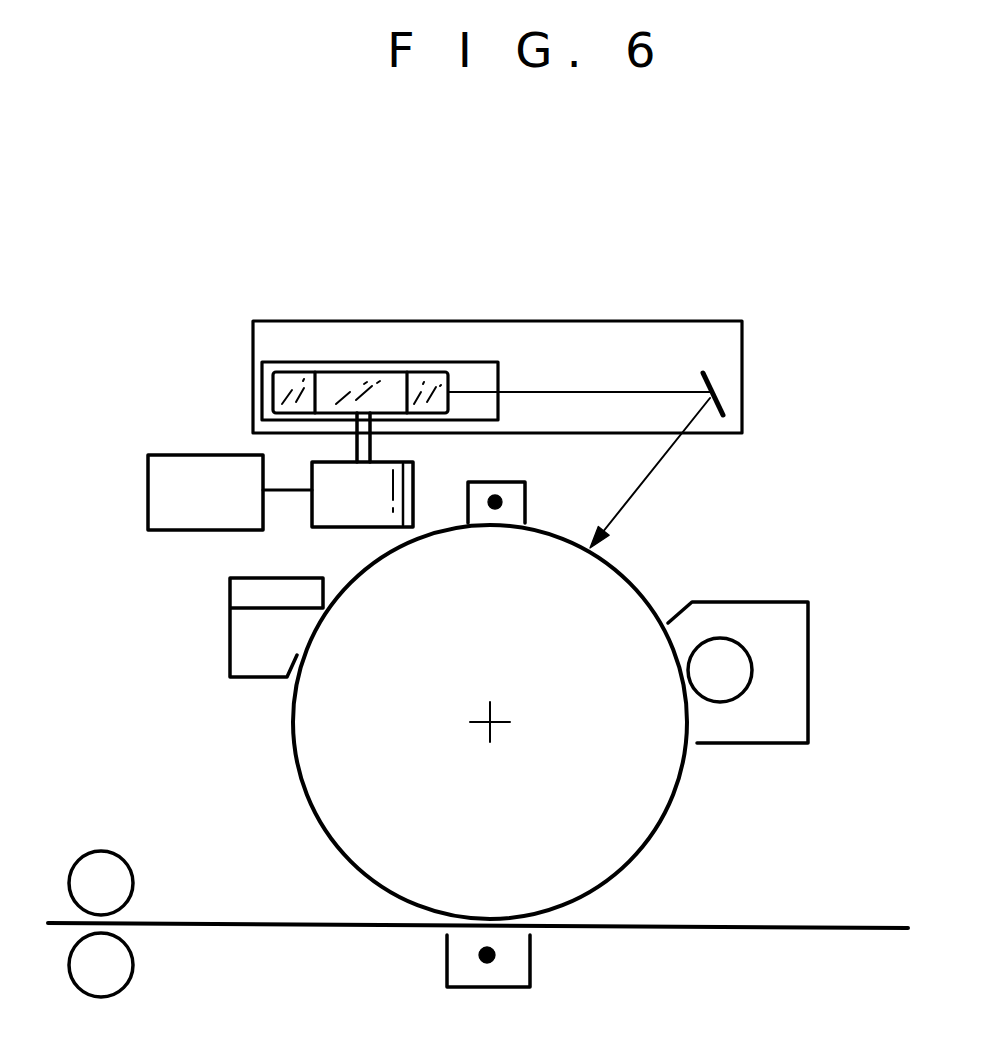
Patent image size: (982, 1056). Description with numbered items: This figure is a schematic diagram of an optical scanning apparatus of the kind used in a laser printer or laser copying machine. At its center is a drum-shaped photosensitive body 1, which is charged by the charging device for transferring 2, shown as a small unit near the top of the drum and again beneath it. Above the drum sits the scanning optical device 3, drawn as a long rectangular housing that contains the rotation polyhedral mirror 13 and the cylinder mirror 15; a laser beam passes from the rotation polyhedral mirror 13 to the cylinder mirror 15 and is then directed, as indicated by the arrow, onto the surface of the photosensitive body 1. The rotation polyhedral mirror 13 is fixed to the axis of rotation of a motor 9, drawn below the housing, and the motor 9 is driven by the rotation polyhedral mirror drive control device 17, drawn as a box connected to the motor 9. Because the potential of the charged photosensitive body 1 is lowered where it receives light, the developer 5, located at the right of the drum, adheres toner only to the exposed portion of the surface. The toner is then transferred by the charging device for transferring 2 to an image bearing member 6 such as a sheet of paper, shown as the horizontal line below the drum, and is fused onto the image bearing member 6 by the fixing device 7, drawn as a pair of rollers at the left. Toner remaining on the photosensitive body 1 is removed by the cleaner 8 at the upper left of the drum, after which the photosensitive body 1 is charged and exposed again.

The photosensitive body 1 is at (634, 588).
The charging device for transferring 2 is at (525, 497).
The scanning optical device 3 is at (487, 321).
The developer 5 is at (808, 690).
The image bearing member 6 is at (727, 925).
The fixing device 7 is at (133, 965).
The cleaner 8 is at (230, 592).
The motor 9 is at (413, 480).
The rotation polyhedral mirror 13 is at (273, 385).
The cylinder mirror 15 is at (723, 407).
The rotation polyhedral mirror drive control device 17 is at (200, 455).